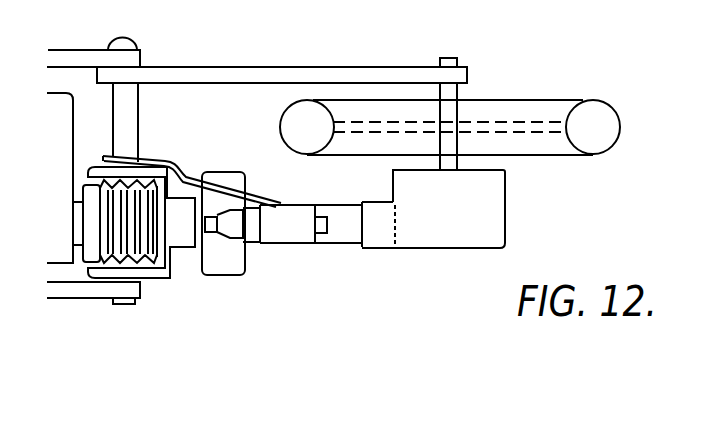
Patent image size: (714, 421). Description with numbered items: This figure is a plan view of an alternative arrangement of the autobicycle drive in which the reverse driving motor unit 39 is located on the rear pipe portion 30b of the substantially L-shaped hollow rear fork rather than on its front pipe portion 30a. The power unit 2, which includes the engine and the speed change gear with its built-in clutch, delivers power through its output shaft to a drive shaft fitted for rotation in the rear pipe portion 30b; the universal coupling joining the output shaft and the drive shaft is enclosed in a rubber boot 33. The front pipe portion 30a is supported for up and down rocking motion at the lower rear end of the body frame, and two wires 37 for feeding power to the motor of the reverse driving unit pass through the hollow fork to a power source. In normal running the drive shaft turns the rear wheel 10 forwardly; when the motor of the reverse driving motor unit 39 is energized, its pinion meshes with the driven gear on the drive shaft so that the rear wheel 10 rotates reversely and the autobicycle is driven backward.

The power unit 2 is at (53, 237).
The rear wheel 10 is at (522, 108).
The front pipe portion 30a is at (132, 114).
The rear pipe portion 30b is at (348, 228).
The boot 33 is at (132, 237).
The wires 37 is at (193, 180).
The reverse driving motor unit 39 is at (288, 228).